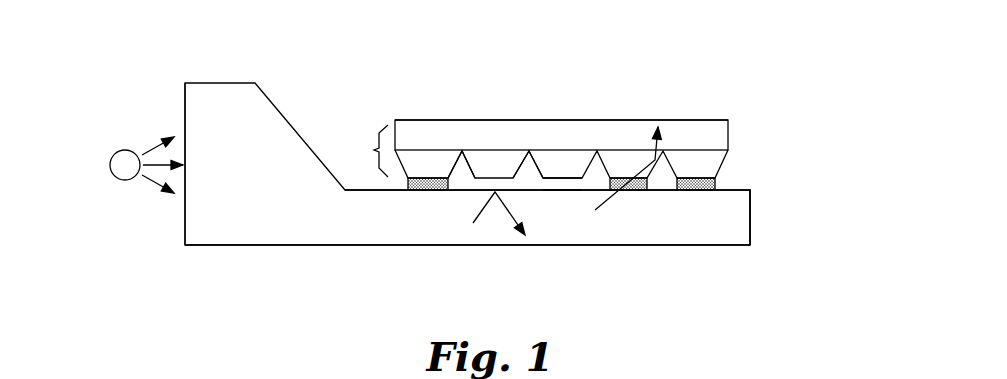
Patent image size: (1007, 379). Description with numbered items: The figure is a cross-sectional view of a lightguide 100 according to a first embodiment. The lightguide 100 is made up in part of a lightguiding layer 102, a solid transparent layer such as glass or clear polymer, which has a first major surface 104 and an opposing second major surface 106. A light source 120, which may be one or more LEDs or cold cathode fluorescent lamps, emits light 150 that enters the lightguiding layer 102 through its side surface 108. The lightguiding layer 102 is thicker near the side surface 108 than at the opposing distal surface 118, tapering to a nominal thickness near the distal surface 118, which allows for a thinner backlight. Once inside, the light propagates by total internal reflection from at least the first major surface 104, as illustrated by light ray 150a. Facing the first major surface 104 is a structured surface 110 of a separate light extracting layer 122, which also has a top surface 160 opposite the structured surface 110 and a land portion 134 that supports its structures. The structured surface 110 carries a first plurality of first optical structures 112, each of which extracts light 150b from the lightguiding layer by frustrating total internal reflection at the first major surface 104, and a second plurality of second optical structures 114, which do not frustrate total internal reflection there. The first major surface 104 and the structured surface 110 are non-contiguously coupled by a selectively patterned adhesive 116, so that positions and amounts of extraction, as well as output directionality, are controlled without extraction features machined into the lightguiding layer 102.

The lightguide 100 is at (695, 50).
The lightguiding layer 102 is at (265, 228).
The first major surface 104 is at (738, 188).
The second major surface 106 is at (547, 247).
The side surface 108 is at (185, 218).
The structured surface 110 is at (720, 165).
The first optical structures 112 is at (482, 160).
The second optical structures 114 is at (563, 182).
The selectively patterned adhesive 116 is at (428, 190).
The distal surface 118 is at (752, 228).
The light source 120 is at (110, 157).
The light extracting layer 122 is at (361, 151).
The land portion 134 is at (708, 132).
The light 150 is at (150, 125).
The light ray 150a is at (502, 213).
The extracted light 150b is at (612, 196).
The top surface 160 is at (540, 120).